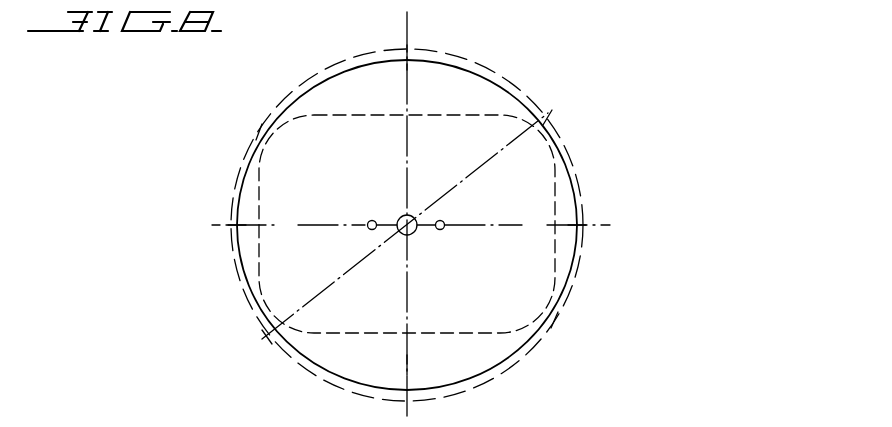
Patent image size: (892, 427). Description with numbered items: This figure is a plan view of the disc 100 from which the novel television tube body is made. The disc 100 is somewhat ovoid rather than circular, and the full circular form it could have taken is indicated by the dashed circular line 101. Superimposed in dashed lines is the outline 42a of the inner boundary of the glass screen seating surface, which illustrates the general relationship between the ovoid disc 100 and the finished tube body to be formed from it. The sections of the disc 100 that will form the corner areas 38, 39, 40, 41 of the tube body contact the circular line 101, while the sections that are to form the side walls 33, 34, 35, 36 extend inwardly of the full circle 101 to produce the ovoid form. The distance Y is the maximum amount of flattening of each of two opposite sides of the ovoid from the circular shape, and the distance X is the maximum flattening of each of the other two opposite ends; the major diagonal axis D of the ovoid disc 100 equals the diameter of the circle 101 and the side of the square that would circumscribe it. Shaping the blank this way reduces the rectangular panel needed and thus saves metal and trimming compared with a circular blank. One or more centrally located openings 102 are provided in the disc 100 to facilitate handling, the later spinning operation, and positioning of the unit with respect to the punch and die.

The disc 100 is at (493, 72).
The circular line 101 is at (468, 47).
The centrally located opening 102 is at (413, 232).
The outline of the inner boundary of the glass screen seating surface 42a is at (495, 116).
The side wall 33 is at (405, 215).
The side wall 34 is at (406, 364).
The side wall 35 is at (513, 226).
The side wall 36 is at (304, 226).
The corner area 38 is at (259, 133).
The corner area 39 is at (268, 336).
The corner area 40 is at (554, 320).
The corner area 41 is at (547, 117).
The major diagonal axis D is at (337, 273).
The maximum flattening of the ends X is at (234, 224).
The maximum flattening of the sides Y is at (405, 52).